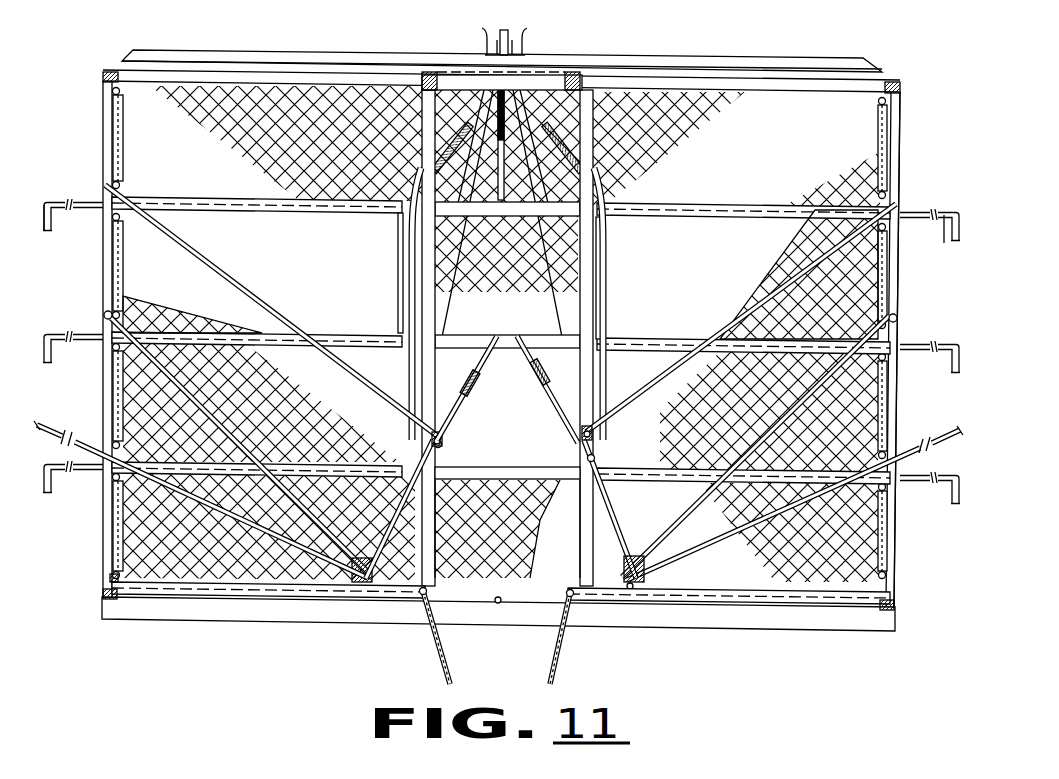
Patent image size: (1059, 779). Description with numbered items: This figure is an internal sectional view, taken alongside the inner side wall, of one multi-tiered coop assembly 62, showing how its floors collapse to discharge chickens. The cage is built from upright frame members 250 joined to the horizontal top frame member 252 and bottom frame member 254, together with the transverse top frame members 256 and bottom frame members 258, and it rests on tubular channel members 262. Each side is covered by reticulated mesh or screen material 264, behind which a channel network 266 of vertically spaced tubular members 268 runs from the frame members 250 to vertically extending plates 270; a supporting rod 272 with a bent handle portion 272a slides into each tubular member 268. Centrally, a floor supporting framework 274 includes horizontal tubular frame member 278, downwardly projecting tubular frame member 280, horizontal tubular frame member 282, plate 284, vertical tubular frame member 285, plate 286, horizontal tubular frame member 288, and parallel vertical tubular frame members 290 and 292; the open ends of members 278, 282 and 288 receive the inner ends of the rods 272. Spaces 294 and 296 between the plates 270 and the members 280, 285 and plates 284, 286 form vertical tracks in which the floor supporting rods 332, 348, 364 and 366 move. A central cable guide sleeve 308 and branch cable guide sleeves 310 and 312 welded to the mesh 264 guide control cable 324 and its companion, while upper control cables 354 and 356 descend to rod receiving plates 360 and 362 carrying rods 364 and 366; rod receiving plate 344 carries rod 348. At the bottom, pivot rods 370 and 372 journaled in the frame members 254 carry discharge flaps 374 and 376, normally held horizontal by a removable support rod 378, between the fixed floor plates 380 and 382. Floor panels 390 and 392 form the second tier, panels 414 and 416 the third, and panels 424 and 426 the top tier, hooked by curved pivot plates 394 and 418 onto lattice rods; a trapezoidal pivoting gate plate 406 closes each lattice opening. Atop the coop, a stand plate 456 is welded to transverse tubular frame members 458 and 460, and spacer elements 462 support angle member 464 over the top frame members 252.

The coop assembly 62 is at (890, 64).
The vertically extending frame member 250 is at (105, 124).
The top frame member 252 is at (775, 70).
The bottom frame member 254 is at (176, 602).
The transverse top frame member 256 is at (104, 70).
The transverse bottom frame member 258 is at (104, 592).
The tubular channel member 262 is at (250, 620).
The reticulated mesh or screen material 264 is at (207, 127).
The channel network 266 is at (614, 260).
The tubular member 268 is at (235, 213).
The vertically extending plate 270 is at (412, 261).
The supporting rod 272 is at (62, 204).
The handle portion 272a is at (46, 226).
The floor supporting framework 274 is at (498, 452).
The horizontally extending tubular frame member 278 is at (515, 270).
The tubular frame member 280 is at (568, 298).
The horizontally extending tubular frame member 282 is at (452, 333).
The vertically extending plate 284 is at (409, 318).
The vertically extending tubular frame member 285 is at (438, 446).
The downwardly extending plate 286 is at (590, 380).
The horizontally extending tubular frame member 288 is at (520, 478).
The vertically extending tubular frame member 290 is at (458, 508).
The vertically extending tubular frame member 292 is at (573, 525).
The space 294 is at (400, 233).
The space 296 is at (600, 320).
The cable guide sleeve 308 is at (506, 315).
The branch cable guide sleeve 310 is at (470, 373).
The branch cable guide sleeve 312 is at (520, 366).
The control cable 324 is at (559, 437).
The floor supporting rod 332 is at (636, 592).
The rod receiving plate 344 is at (618, 535).
The floor supporting rod 348 is at (622, 590).
The upper control cable 354 is at (487, 45).
The upper control cable 356 is at (522, 45).
The rod receiving plate 360 is at (466, 380).
The rod receiving plate 362 is at (597, 458).
The floor supporting rod 364 is at (405, 432).
The floor supporting rod 366 is at (597, 434).
The pivot rod 370 is at (430, 596).
The pivot rod 372 is at (566, 598).
The discharge flap 374 is at (440, 676).
The discharge flap 376 is at (552, 676).
The support rod 378 is at (498, 605).
The plate 380 is at (146, 600).
The plate 382 is at (692, 598).
The floor panel 390 is at (82, 430).
The floor panel 392 is at (708, 543).
The curved pivot plate 394 is at (45, 414).
The pivoting gate plate 406 is at (122, 126).
The floor panel 414 is at (266, 392).
The floor panel 416 is at (650, 519).
The curved pivot plate 418 is at (108, 314).
The floor panel 424 is at (186, 244).
The floor panel 426 is at (755, 292).
The stand plate 456 is at (560, 72).
The transversely extending tubular frame member 458 is at (430, 78).
The transversely extending tubular frame member 460 is at (580, 82).
The spacer element 462 is at (168, 60).
The angle member 464 is at (205, 52).